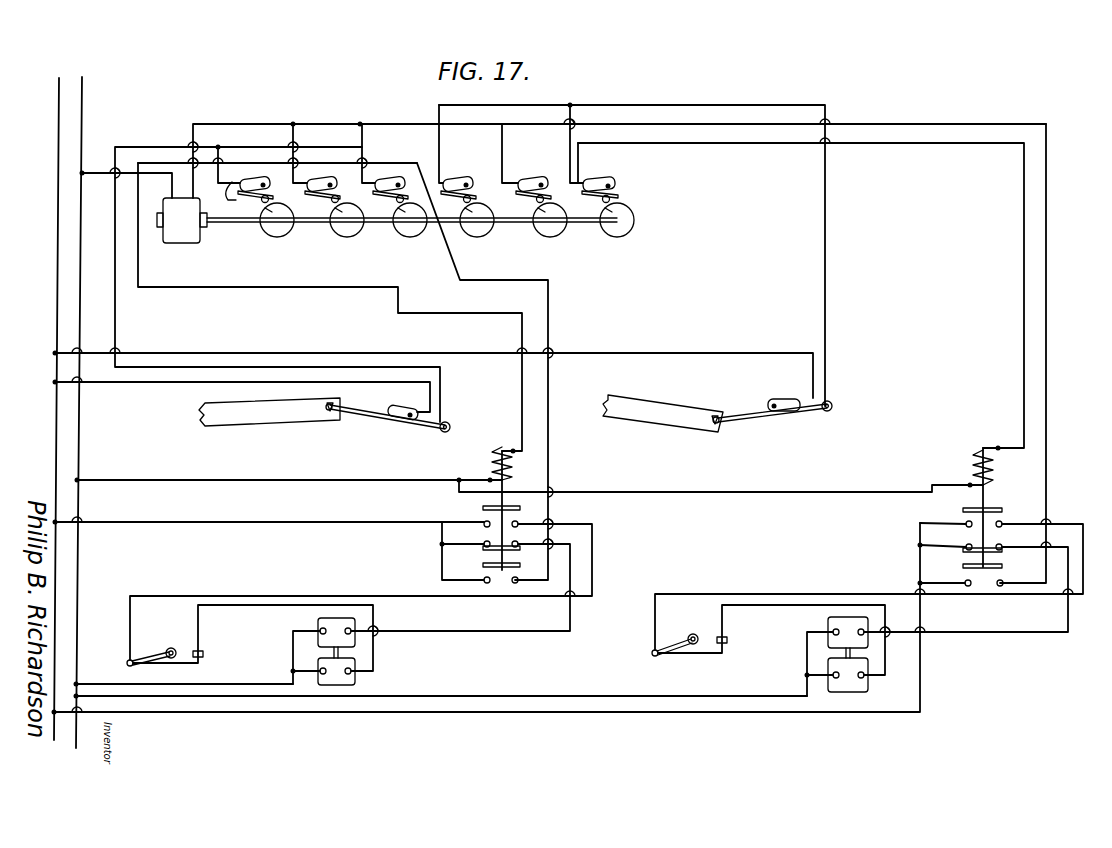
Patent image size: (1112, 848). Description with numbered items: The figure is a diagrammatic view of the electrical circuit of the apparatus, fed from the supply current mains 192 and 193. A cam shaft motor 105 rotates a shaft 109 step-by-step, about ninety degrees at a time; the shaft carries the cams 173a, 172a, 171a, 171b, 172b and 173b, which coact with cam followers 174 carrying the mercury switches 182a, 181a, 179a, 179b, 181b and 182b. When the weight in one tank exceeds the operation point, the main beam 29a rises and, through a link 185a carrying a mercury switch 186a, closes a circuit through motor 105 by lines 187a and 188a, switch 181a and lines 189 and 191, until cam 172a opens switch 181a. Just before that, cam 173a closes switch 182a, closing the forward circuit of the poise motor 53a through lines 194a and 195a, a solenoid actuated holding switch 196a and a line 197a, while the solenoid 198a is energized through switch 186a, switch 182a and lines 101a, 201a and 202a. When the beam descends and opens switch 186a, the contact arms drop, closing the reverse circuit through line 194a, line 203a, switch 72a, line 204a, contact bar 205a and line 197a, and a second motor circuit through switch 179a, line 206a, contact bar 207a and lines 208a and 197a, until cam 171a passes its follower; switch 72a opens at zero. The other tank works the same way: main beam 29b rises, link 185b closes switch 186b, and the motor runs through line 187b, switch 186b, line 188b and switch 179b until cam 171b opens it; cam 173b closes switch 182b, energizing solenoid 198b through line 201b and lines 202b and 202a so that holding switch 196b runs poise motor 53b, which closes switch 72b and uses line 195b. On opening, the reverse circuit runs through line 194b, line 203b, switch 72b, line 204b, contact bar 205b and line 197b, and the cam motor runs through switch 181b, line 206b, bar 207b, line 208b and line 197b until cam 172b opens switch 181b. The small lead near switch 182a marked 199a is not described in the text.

The supply current main 193 is at (57, 127).
The supply current main 192 is at (84, 80).
The line 191 is at (92, 170).
The line 189 is at (290, 122).
The line 188a is at (222, 145).
The line 188b is at (646, 104).
The line 187a is at (128, 384).
The line 187b is at (696, 348).
The line 101a is at (172, 161).
The line 201a is at (280, 289).
The line 201b is at (1022, 348).
The line 206a is at (549, 450).
The line 206b is at (1047, 386).
The cam shaft motor 105 is at (180, 243).
The shaft 109 is at (520, 240).
The cam 173a is at (270, 233).
The cam 172a is at (340, 233).
The cam 171a is at (403, 233).
The cam 171b is at (472, 235).
The cam 172b is at (560, 233).
The cam 173b is at (634, 226).
The mercury switch 182a is at (243, 177).
The cam follower 174 is at (262, 190).
The switch lead 199a is at (239, 199).
The mercury switch 181a is at (316, 177).
The mercury switch 179a is at (390, 176).
The mercury switch 179b is at (465, 168).
The mercury switch 181b is at (538, 177).
The mercury switch 182b is at (604, 177).
The main beam 29a is at (266, 426).
The main beam 29b is at (668, 424).
The link 185a is at (355, 424).
The link 185b is at (751, 426).
The mercury switch 186a is at (402, 406).
The mercury switch 186b is at (779, 398).
The solenoid 198a is at (491, 459).
The solenoid 198b is at (1004, 467).
The contact bar 207a is at (500, 573).
The contact bar 207b is at (1003, 570).
The contact bar 205a is at (521, 508).
The contact bar 205b is at (1010, 505).
The solenoid actuated holding switch 196a is at (482, 506).
The solenoid actuated holding switch 196b is at (962, 518).
The line 208a is at (440, 570).
The line 208b is at (948, 586).
The line 197a is at (285, 524).
The line 197b is at (918, 564).
The line 202a is at (191, 482).
The line 202b is at (778, 494).
The line 204a is at (238, 585).
The line 204b is at (818, 586).
The line 195a is at (478, 633).
The line 195b is at (990, 634).
The switch 72a is at (153, 655).
The switch 72b is at (679, 650).
The poise motor 53a is at (302, 640).
The poise motor 53b is at (827, 652).
The line 194a is at (212, 688).
The line 194b is at (641, 695).
The line 203a is at (375, 670).
The line 203b is at (774, 606).